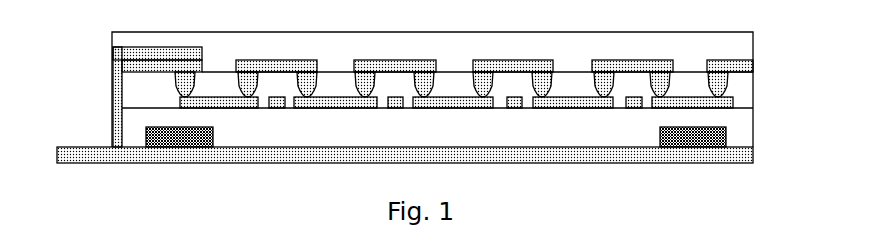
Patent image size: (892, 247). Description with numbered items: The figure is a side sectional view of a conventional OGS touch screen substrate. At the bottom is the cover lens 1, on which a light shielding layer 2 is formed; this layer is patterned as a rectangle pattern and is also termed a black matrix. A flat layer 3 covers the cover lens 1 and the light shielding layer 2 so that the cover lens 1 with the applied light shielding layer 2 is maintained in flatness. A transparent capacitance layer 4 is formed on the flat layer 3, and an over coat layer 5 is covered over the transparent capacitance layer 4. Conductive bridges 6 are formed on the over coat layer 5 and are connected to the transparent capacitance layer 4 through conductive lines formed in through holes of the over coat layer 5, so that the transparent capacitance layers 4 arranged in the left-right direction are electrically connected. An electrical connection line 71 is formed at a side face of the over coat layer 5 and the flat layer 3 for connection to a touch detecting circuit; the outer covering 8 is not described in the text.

The cover lens 1 is at (83, 153).
The light shielding layer 2 is at (726, 135).
The flat layer 3 is at (738, 120).
The transparent capacitance layer 4 is at (687, 99).
The over coat layer 5 is at (737, 87).
The conductive bridges 6 is at (632, 62).
The cover 8 is at (737, 55).
The electrical connection line 71 is at (120, 95).